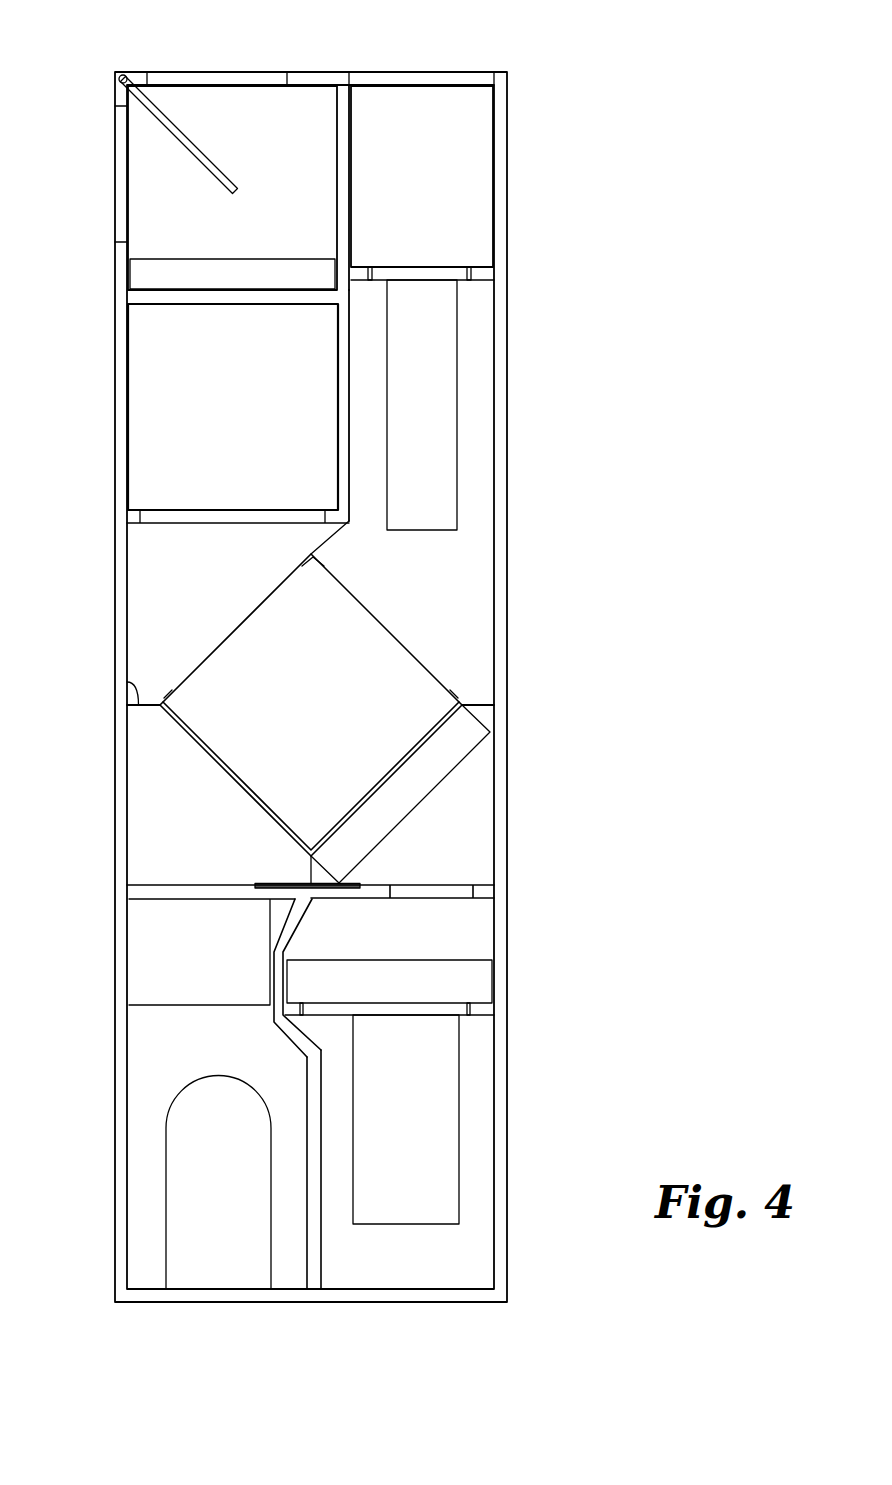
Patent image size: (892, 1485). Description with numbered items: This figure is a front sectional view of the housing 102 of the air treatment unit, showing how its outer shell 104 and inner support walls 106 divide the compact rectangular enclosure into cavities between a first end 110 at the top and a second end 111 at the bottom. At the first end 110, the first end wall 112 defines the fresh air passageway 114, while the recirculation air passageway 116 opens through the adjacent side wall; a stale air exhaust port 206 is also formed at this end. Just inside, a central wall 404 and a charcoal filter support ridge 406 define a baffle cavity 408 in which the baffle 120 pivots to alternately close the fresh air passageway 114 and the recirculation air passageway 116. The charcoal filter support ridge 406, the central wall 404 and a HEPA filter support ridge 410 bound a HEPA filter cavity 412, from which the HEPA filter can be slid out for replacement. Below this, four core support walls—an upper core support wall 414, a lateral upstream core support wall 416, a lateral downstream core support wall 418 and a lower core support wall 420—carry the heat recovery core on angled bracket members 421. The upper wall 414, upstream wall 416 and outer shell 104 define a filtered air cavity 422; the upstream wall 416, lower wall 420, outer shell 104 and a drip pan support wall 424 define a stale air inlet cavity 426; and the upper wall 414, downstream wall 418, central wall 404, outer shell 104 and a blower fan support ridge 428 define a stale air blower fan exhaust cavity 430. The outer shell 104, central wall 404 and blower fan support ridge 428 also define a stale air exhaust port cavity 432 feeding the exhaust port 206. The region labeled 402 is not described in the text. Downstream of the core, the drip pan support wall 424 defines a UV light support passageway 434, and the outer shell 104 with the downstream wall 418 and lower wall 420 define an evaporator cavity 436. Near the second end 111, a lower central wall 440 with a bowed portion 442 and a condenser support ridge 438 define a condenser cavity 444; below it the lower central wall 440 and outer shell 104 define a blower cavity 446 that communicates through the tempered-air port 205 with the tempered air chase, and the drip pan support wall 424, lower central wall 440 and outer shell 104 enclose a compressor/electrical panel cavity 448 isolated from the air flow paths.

The first end 110 is at (480, 60).
The recirculation air passageway 116 is at (122, 176).
The fresh air passageway 114 is at (221, 73).
The first end wall 112 is at (303, 78).
The stale air exhaust port 206 is at (403, 82).
The baffle cavity 408 is at (185, 100).
The baffle 120 is at (180, 143).
The charcoal filter support ridge 406 is at (167, 293).
The inner support walls 106 is at (345, 248).
The stale air exhaust port cavity 432 is at (457, 170).
The housing 102 is at (522, 235).
The blower fan support ridge 428 is at (482, 282).
The stale air blower fan exhaust cavity 430 is at (480, 453).
The HEPA filter cavity 412 is at (160, 413).
The central wall 404 is at (340, 397).
The HEPA filter support ridge 410 is at (132, 517).
The upper core support wall 414 is at (335, 533).
The angled bracket members 421 is at (303, 552).
The filtered air cavity 422 is at (178, 615).
The stale air inlet cavity 426 is at (168, 803).
The lateral upstream core support wall 416 is at (127, 687).
The lateral downstream core support wall 418 is at (485, 703).
The evaporator cavity 436 is at (478, 778).
The lower core support wall 420 is at (311, 877).
The UV light support passageway 434 is at (438, 888).
The outer shell 104 is at (525, 853).
The corridor 402 is at (467, 590).
The drip pan support wall 424 is at (165, 893).
The bowed portion 442 is at (280, 985).
The lower central wall 440 is at (317, 1175).
The condenser cavity 444 is at (473, 927).
The condenser support ridge 438 is at (479, 1003).
The tempered-air port 205 is at (418, 1192).
The blower cavity 446 is at (477, 1203).
The compressor/electrical panel cavity 448 is at (150, 1100).
The second end 111 is at (418, 1318).